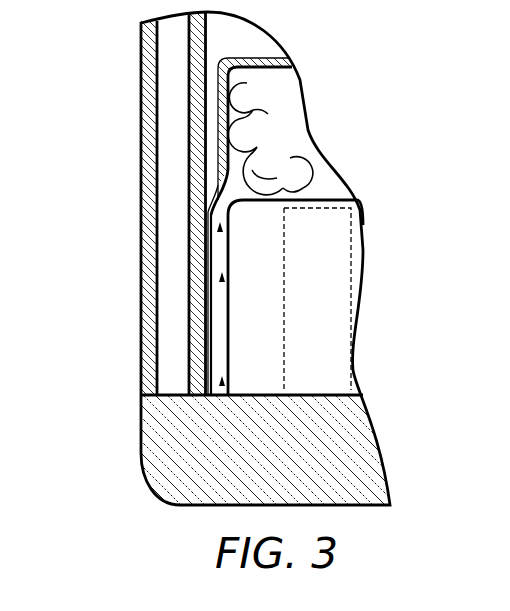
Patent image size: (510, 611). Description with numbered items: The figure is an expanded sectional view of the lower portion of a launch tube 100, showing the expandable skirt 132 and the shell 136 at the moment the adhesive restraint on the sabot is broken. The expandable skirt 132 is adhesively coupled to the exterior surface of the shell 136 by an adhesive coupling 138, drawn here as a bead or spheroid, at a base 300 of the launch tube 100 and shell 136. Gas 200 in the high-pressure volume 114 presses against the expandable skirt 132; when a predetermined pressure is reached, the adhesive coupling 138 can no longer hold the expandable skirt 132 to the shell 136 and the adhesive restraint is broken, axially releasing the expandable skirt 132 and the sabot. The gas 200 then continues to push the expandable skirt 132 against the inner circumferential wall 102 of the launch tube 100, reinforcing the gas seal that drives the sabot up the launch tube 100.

The launch tube 100 is at (141, 50).
The inner circumferential wall 102 is at (188, 121).
The high-pressure volume 114 is at (342, 187).
The expandable skirt 132 is at (210, 363).
The shell 136 is at (222, 248).
The adhesive coupling 138 is at (223, 330).
The gas 200 is at (286, 164).
The base 300 is at (198, 397).